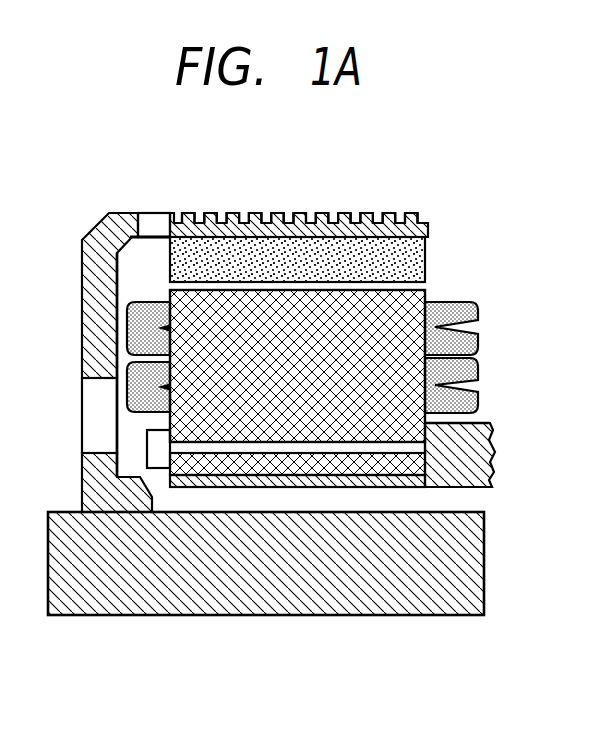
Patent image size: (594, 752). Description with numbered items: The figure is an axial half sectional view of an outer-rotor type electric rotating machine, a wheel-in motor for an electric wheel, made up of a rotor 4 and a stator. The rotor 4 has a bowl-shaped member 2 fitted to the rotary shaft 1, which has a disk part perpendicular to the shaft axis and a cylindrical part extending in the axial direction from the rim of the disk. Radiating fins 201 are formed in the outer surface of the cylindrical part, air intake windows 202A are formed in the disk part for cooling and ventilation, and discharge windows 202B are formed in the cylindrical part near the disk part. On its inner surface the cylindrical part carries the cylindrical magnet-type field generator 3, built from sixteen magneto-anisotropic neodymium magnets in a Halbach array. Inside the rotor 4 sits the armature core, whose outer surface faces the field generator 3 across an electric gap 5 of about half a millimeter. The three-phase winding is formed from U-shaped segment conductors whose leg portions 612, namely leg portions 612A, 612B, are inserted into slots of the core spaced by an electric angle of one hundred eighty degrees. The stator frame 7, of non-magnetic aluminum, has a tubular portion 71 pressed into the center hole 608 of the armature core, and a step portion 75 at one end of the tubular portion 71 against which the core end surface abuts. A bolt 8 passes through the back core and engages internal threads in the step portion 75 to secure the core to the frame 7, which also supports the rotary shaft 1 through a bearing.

The rotary shaft 1 is at (118, 597).
The bowl-shaped member 2 is at (325, 395).
The magnet-type field generator 3 is at (307, 188).
The rotor 4 is at (104, 228).
The electric gap 5 is at (387, 282).
The frame 7 is at (491, 473).
The bolt 8 is at (317, 446).
The tubular portion 71 is at (265, 478).
The step portion 75 is at (455, 432).
The radiating fins 201 is at (285, 212).
The air intake windows 202A is at (88, 404).
The discharge windows 202B is at (153, 225).
The center hole 608 is at (383, 478).
The leg portions 612 is at (135, 415).
The leg portion 612A is at (475, 303).
The leg portion 612B is at (478, 345).